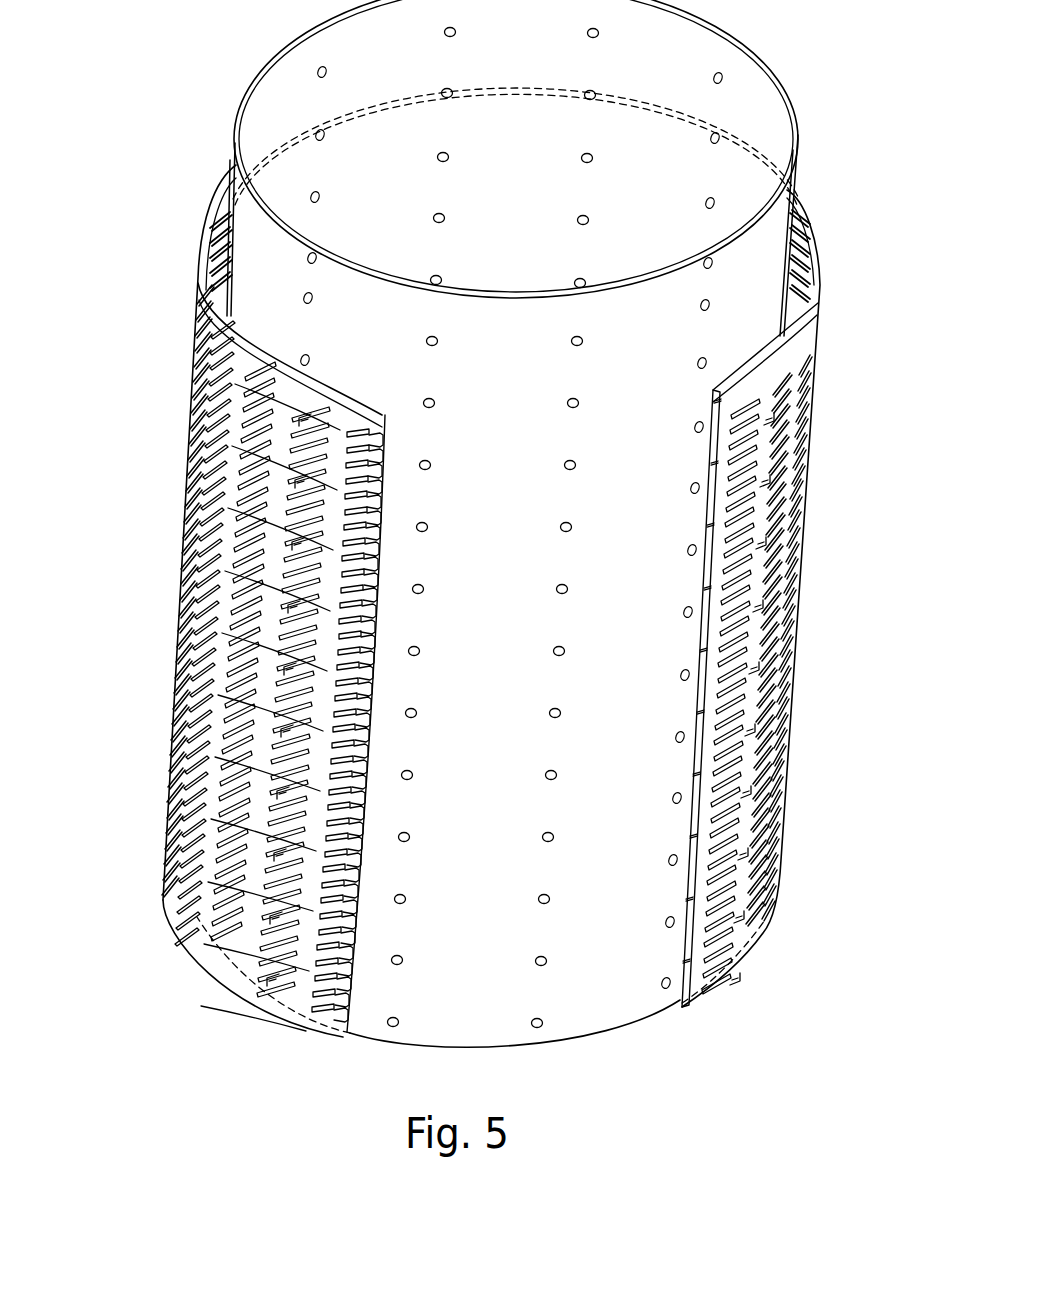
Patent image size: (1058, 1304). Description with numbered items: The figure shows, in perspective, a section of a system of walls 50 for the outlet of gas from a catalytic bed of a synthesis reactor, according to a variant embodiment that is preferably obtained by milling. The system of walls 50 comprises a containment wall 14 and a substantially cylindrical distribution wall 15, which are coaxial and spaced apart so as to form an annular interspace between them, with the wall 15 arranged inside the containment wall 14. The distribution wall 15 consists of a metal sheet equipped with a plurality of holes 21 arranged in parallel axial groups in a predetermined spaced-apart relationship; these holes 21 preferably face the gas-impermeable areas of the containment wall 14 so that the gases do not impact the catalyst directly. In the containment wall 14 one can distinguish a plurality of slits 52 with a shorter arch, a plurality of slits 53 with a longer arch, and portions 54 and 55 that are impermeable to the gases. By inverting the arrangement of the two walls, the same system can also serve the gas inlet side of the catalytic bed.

The system of walls 50 is at (842, 98).
The distribution wall 15 is at (766, 279).
The holes 21 is at (399, 1020).
The containment wall 14 is at (817, 490).
The slits with a shorter arch 52 is at (280, 1010).
The slits with a longer arch 53 is at (208, 958).
The portions impermeable to the gases 54 is at (253, 996).
The portions impermeable to the gases 55 is at (317, 1025).